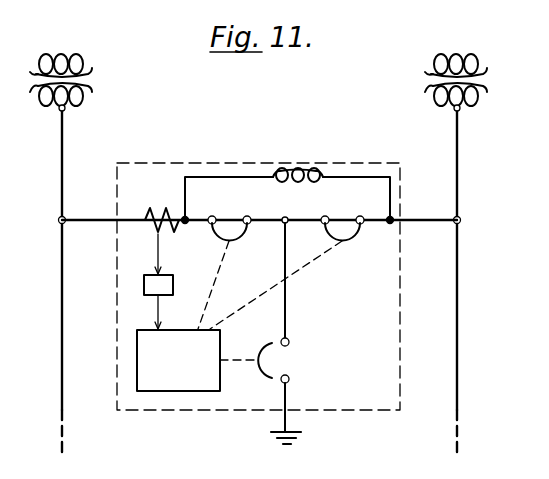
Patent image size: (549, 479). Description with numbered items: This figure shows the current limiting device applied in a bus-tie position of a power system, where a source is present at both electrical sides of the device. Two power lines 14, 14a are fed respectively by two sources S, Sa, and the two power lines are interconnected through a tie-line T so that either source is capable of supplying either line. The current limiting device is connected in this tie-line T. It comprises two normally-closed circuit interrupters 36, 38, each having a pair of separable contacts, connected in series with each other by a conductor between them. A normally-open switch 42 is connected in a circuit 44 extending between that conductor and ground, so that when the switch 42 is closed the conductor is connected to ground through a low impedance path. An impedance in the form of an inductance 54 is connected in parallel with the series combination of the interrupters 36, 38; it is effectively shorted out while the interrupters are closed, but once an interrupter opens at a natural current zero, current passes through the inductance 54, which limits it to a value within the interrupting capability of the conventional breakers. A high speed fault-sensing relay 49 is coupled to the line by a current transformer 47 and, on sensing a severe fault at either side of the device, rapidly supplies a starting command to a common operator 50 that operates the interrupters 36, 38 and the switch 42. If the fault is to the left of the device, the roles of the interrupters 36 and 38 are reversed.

The power line 14 is at (60, 158).
The power line 14a is at (459, 156).
The source S is at (90, 80).
The source Sa is at (428, 80).
The tie-line T is at (429, 218).
The current transformer 47 is at (158, 212).
The fault-sensing relay 49 is at (143, 287).
The common operator 50 is at (137, 362).
The inductance 54 is at (300, 168).
The circuit interrupter 36 is at (229, 217).
The circuit interrupter 38 is at (342, 217).
The circuit 44 is at (288, 312).
The normally-open switch 42 is at (282, 362).